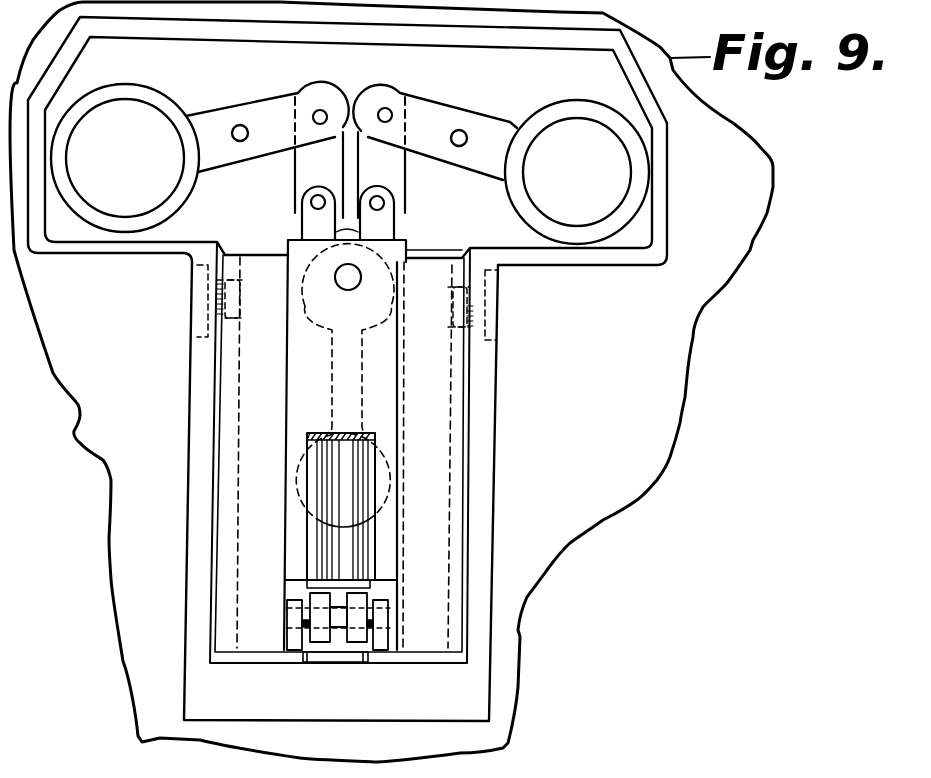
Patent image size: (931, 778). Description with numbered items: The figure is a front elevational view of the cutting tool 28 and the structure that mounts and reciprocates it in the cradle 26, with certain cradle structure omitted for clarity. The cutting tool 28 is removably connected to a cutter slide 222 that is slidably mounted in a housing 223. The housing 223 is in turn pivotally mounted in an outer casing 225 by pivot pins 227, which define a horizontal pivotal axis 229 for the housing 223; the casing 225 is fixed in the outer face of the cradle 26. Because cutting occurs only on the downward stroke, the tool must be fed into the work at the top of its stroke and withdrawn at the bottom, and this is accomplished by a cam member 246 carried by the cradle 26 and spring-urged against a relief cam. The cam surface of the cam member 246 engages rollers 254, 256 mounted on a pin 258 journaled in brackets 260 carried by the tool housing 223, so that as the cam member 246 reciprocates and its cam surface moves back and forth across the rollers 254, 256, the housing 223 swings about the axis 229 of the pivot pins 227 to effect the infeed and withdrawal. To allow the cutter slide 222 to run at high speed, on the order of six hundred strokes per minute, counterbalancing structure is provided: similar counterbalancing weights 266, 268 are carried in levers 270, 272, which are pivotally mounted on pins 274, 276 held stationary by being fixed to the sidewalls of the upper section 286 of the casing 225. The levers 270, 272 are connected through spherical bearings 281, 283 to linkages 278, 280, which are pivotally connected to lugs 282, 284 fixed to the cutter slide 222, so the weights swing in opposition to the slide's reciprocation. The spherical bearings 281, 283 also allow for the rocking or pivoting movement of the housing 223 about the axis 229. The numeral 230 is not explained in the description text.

The cradle 26 is at (690, 397).
The cutting tool 28 is at (375, 538).
The cutter slide 222 is at (408, 248).
The housing 223 is at (477, 472).
The outer casing 225 is at (500, 407).
The pivot pins 227 is at (234, 319).
The horizontal pivotal axis 229 is at (518, 308).
The plunger 230 is at (330, 391).
The cam member 246 is at (387, 590).
The roller 254 is at (292, 650).
The roller 256 is at (340, 637).
The pin 258 is at (330, 603).
The brackets 260 is at (288, 600).
The counterbalancing weight 266 is at (145, 149).
The counterbalancing weight 268 is at (595, 159).
The lever 270 is at (200, 112).
The lever 272 is at (502, 120).
The pin 274 is at (243, 125).
The pin 276 is at (461, 130).
The linkage 278 is at (293, 180).
The linkage 280 is at (402, 178).
The spherical bearing 281 is at (323, 110).
The lug 282 is at (302, 226).
The spherical bearing 283 is at (388, 108).
The lug 284 is at (395, 230).
The upper section 286 is at (670, 165).